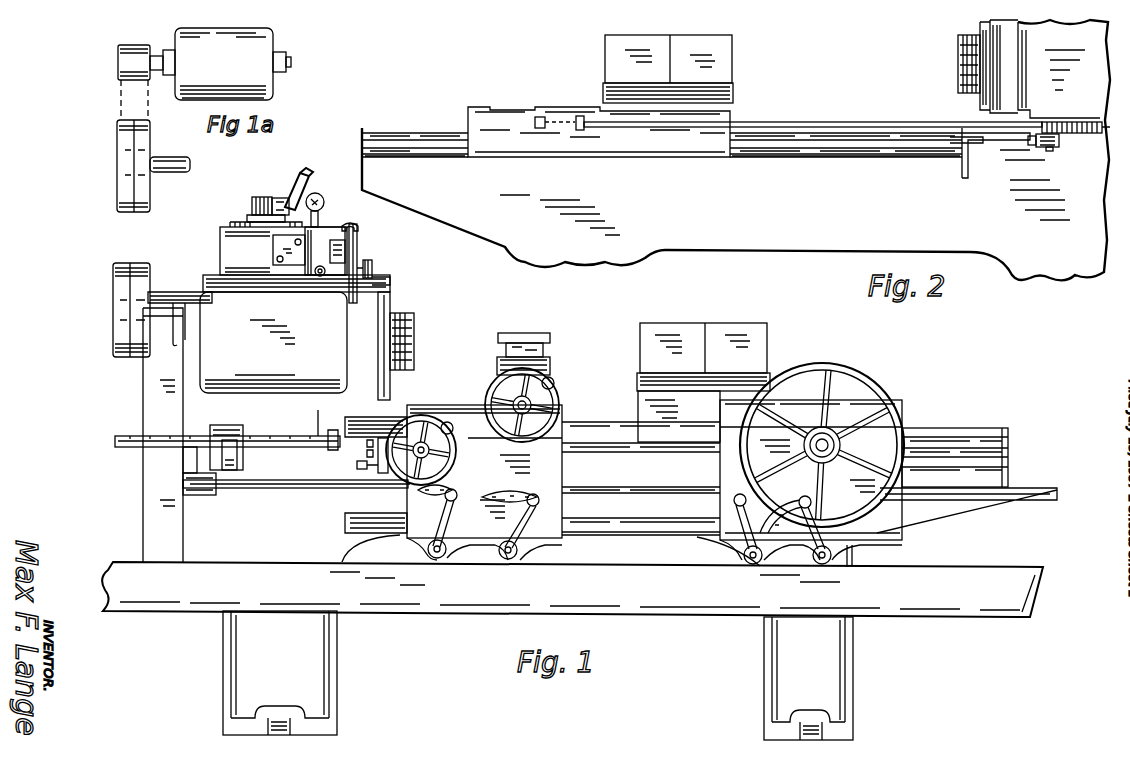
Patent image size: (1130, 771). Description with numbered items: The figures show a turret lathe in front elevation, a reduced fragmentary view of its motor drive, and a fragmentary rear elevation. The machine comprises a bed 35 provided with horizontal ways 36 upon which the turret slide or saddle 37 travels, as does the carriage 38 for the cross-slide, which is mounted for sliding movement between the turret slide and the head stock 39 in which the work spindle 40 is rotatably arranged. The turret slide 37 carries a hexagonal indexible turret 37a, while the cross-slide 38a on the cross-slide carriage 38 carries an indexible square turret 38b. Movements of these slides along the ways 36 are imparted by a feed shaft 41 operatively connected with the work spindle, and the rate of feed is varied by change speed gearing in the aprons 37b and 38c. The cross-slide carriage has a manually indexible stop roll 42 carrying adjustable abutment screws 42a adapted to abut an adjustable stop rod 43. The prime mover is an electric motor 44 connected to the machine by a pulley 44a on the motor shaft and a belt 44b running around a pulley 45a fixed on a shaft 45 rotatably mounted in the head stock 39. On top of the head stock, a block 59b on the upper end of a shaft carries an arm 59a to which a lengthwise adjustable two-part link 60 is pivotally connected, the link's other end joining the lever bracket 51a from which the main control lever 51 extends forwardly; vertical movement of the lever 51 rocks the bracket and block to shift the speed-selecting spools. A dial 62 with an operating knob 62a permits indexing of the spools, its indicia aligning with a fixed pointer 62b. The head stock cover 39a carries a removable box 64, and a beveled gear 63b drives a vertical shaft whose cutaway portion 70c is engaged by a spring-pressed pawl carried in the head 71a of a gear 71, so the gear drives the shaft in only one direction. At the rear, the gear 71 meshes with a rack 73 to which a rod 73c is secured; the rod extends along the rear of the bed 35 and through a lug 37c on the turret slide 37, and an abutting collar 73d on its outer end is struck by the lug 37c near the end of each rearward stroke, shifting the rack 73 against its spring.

In FIG. 2, the bed 35 is at (1067, 268).
In FIG. 1, the bed 35 is at (907, 513).
In FIG. 2, the horizontal ways 36 is at (874, 145).
In FIG. 1, the horizontal ways 36 is at (940, 428).
In FIG. 2, the turret slide or saddle 37 is at (662, 143).
In FIG. 1, the turret slide or saddle 37 is at (855, 405).
In FIG. 2, the hexagonal indexible turret 37a is at (735, 58).
In FIG. 1, the hexagonal indexible turret 37a is at (758, 340).
In FIG. 1, the apron of turret slide 37b is at (866, 540).
In FIG. 2, the lug 37c is at (738, 108).
In FIG. 1, the cross-slide carriage 38 is at (562, 425).
In FIG. 1, the cross-slide 38a is at (549, 379).
In FIG. 1, the indexible square turret 38b is at (540, 333).
In FIG. 1, the apron of cross-slide carriage 38c is at (543, 537).
In FIG. 2, the head stock 39 is at (1035, 28).
In FIG. 1, the head stock 39 is at (382, 293).
In FIG. 1, the head stock cover 39a is at (220, 242).
In FIG. 2, the work spindle 40 is at (958, 56).
In FIG. 1, the work spindle 40 is at (414, 333).
In FIG. 1, the feed shaft 41 is at (321, 488).
In FIG. 1, the stop roll 42 is at (395, 473).
In FIG. 1, the adjustable abutment screws 42a is at (362, 454).
In FIG. 1, the adjustable stop rod 43 is at (320, 443).
In FIG. 1A, the electric motor 44 is at (265, 46).
In FIG. 1A, the motor pulley 44a is at (120, 62).
In FIG. 1A, the belt 44b is at (120, 105).
In FIG. 1, the shaft 45 is at (118, 296).
In FIG. 1A, the pulley 45a is at (120, 183).
In FIG. 1, the main control lever 51 is at (321, 196).
In FIG. 1, the lever bracket 51a is at (318, 221).
In FIG. 1, the speed lever hub 59a is at (285, 197).
In FIG. 1, the block 59b is at (253, 205).
In FIG. 1, the two-part link 60 is at (292, 186).
In FIG. 1, the dial 62 is at (358, 247).
In FIG. 1, the operating knob 62a is at (372, 270).
In FIG. 1, the fixed pointer 62b is at (355, 231).
In FIG. 1, the beveled gear 63b is at (305, 283).
In FIG. 1, the removable box 64 is at (336, 281).
In FIG. 2, the cutaway portion 70c is at (1046, 147).
In FIG. 2, the gear 71 is at (1048, 124).
In FIG. 2, the gear head 71a is at (1054, 149).
In FIG. 2, the rack 73 is at (1068, 124).
In FIG. 2, the rod 73c is at (838, 126).
In FIG. 2, the abutting collar 73d is at (580, 131).